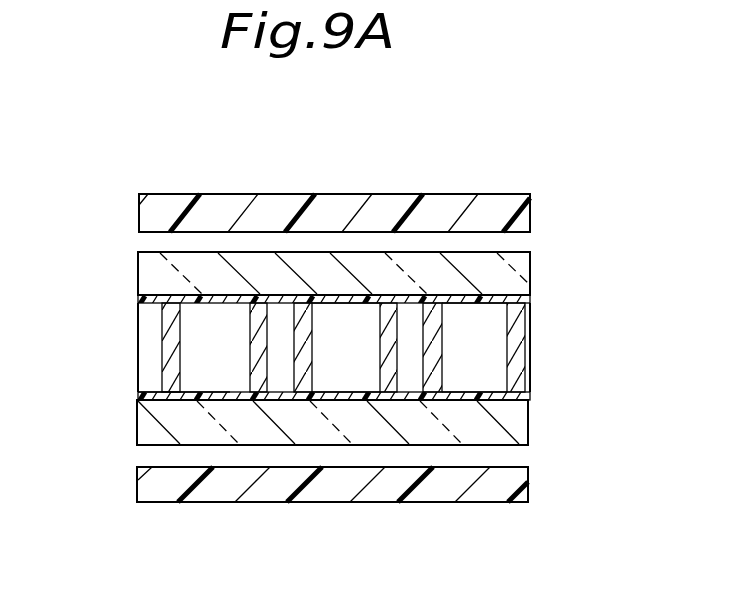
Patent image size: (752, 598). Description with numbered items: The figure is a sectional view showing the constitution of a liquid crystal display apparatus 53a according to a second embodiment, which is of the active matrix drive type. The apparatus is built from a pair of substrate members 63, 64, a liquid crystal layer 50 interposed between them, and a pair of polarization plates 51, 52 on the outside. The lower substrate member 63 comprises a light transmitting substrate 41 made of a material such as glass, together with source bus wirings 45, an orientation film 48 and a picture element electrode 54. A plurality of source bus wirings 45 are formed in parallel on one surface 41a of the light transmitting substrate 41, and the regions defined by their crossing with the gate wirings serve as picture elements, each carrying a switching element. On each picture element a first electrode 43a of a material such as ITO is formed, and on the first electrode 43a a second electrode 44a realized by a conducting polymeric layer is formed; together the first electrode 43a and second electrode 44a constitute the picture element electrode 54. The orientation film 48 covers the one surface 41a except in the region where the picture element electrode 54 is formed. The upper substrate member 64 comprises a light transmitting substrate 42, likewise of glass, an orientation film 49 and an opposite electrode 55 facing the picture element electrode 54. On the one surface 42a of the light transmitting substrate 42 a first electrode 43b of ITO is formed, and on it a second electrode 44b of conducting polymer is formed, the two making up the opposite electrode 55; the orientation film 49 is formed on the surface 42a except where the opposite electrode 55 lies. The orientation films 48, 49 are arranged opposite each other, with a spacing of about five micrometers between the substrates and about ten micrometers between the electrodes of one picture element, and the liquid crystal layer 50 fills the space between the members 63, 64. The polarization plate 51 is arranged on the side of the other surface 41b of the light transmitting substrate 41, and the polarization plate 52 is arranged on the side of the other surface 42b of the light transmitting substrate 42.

The light transmitting substrate 41 is at (520, 421).
The one surface of light transmitting substrate 41a is at (337, 392).
The other surface of light transmitting substrate 41b is at (282, 445).
The light transmitting substrate 42 is at (532, 265).
The one surface of light transmitting substrate 42a is at (342, 303).
The other surface of light transmitting substrate 42b is at (263, 252).
The first electrode 43a is at (166, 391).
The first electrode 43b is at (533, 299).
The second electrode 44a is at (172, 333).
The second electrode 44b is at (520, 330).
The source bus wiring 45 is at (142, 397).
The orientation film 48 is at (533, 398).
The orientation film 49 is at (158, 296).
The liquid crystal layer 50 is at (496, 368).
The polarization plate 51 is at (530, 483).
The polarization plate 52 is at (532, 212).
The liquid crystal display apparatus 53a is at (359, 160).
The picture element electrode 54 is at (72, 318).
The opposite electrode 55 is at (618, 293).
The substrate member 63 is at (598, 392).
The substrate member 64 is at (667, 250).